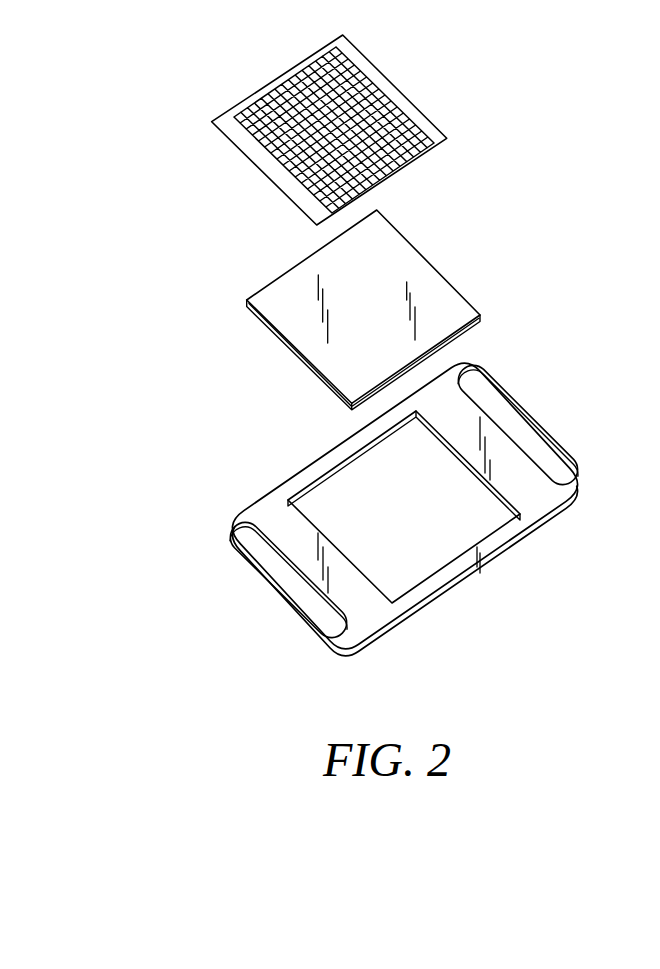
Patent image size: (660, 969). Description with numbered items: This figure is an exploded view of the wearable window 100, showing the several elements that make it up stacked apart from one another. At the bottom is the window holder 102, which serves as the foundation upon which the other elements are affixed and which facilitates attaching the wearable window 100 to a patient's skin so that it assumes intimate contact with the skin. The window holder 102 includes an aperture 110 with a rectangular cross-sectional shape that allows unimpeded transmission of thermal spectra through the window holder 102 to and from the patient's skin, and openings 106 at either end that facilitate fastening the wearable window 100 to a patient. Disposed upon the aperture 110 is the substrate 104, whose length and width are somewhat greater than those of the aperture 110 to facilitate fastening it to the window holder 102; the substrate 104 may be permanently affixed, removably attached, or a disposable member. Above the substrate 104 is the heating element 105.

The wearable window 100 is at (134, 173).
The window holder 102 is at (542, 502).
The substrate 104 is at (460, 283).
The heating element 105 is at (385, 90).
The openings 106 is at (512, 423).
The aperture 110 is at (437, 547).